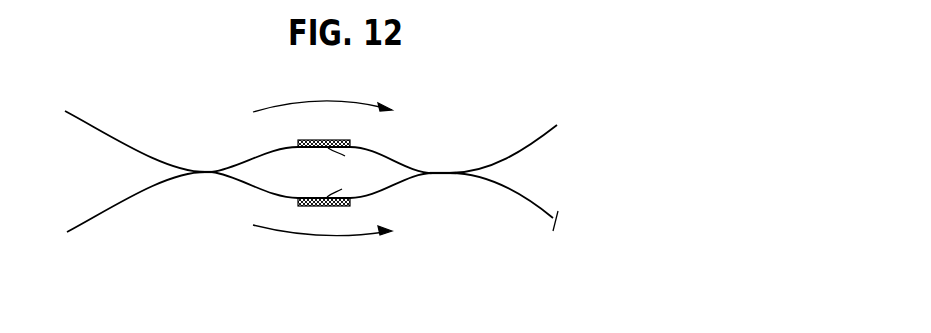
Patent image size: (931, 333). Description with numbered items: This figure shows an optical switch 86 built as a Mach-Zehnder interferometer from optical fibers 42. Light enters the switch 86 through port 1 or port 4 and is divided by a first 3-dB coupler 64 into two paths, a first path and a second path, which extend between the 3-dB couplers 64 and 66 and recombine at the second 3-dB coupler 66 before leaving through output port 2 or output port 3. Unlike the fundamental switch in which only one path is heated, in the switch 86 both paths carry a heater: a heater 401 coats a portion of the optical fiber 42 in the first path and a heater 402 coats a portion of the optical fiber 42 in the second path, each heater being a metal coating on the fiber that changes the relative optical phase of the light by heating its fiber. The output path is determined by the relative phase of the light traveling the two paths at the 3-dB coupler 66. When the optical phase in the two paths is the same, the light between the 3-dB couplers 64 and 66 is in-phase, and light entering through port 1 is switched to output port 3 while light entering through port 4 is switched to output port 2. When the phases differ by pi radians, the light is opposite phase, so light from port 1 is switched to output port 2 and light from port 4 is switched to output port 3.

The port 1 is at (128, 210).
The output port 2 is at (512, 138).
The output port 3 is at (505, 216).
The port 4 is at (126, 134).
The optical fibers 42 is at (138, 151).
The heater 401 is at (348, 147).
The heater 402 is at (349, 203).
The 3-dB coupler 64 is at (208, 175).
The 3-dB coupler 66 is at (435, 176).
The optical switch 86 is at (223, 273).